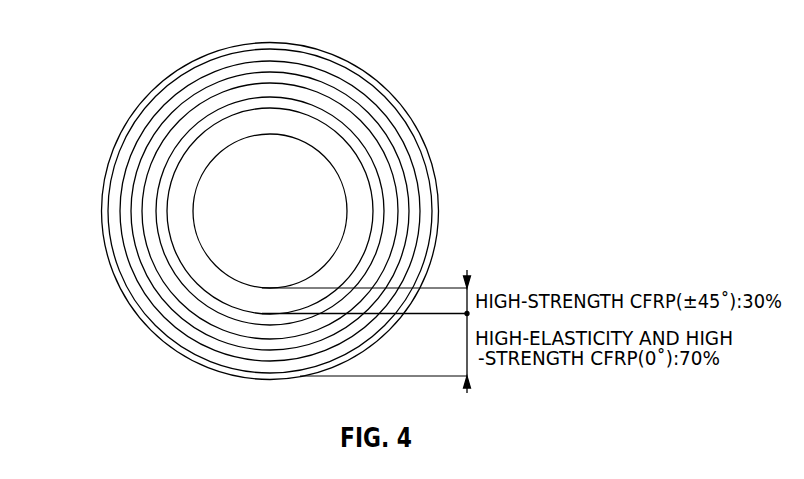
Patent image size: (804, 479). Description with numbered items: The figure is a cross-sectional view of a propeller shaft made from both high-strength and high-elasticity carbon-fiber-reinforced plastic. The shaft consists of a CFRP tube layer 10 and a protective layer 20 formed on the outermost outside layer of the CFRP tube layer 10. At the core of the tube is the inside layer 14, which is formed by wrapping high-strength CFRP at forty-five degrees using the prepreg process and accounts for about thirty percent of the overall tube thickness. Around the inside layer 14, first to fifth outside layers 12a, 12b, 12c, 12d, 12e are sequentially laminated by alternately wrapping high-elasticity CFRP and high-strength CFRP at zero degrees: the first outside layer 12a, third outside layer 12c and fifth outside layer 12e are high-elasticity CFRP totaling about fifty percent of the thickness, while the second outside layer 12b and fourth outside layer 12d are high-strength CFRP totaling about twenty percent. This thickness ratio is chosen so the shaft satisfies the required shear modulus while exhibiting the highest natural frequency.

The CFRP tube layer 10 is at (44, 138).
The first outside layer 12a is at (180, 147).
The second outside layer 12b is at (153, 175).
The third outside layer 12c is at (137, 197).
The fourth outside layer 12d is at (125, 222).
The fifth outside layer 12e is at (117, 250).
The inside layer 14 is at (188, 265).
The protective layer 20 is at (142, 103).